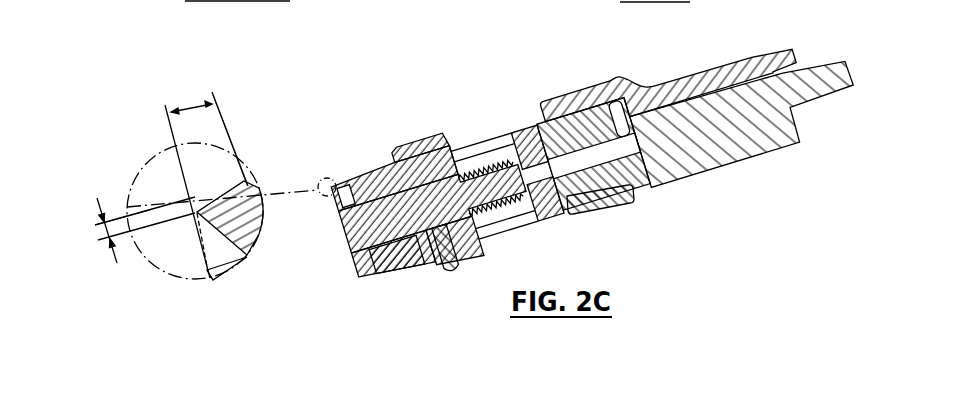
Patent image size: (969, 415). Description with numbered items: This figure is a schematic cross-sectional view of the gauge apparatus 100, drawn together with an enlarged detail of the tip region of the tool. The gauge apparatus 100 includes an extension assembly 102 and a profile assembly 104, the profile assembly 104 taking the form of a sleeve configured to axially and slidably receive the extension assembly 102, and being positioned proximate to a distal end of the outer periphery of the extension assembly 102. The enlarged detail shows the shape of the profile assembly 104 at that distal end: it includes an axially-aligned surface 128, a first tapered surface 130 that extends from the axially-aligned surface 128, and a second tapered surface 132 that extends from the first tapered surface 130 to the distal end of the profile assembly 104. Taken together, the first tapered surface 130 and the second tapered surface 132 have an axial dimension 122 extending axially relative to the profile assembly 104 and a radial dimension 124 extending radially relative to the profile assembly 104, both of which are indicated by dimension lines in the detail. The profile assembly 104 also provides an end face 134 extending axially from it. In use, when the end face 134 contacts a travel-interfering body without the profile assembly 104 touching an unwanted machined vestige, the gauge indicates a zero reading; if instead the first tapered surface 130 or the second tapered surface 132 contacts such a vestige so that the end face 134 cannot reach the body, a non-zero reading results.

The gauge apparatus 100 is at (722, 50).
The extension assembly 102 is at (396, 230).
The profile assembly 104 is at (424, 158).
The axial dimension 122 is at (216, 106).
The radial dimension 124 is at (94, 242).
The axially-aligned surface 128 is at (243, 178).
The first tapered surface 130 is at (216, 194).
The second tapered surface 132 is at (147, 214).
The end face 134 is at (207, 274).